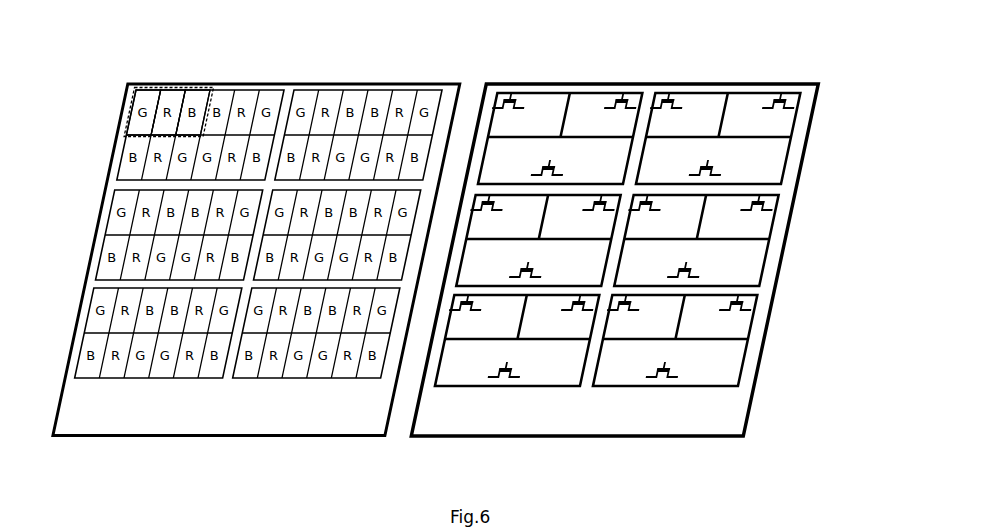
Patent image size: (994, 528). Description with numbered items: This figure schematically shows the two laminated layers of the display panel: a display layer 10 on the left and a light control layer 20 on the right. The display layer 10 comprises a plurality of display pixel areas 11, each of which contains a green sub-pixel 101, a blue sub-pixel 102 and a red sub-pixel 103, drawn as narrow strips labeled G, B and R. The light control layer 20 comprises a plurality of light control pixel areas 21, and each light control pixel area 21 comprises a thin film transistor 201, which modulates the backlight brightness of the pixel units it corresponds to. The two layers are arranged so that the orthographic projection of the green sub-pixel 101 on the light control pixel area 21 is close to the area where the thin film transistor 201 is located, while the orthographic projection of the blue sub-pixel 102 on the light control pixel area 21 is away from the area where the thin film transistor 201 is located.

The display layer 10 is at (277, 410).
The display pixel area 11 is at (130, 108).
The green sub-pixel 101 is at (145, 98).
The blue sub-pixel 102 is at (195, 98).
The red sub-pixel 103 is at (172, 98).
The light control layer 20 is at (587, 408).
The light control pixel area 21 is at (755, 325).
The thin film transistor 201 is at (720, 170).